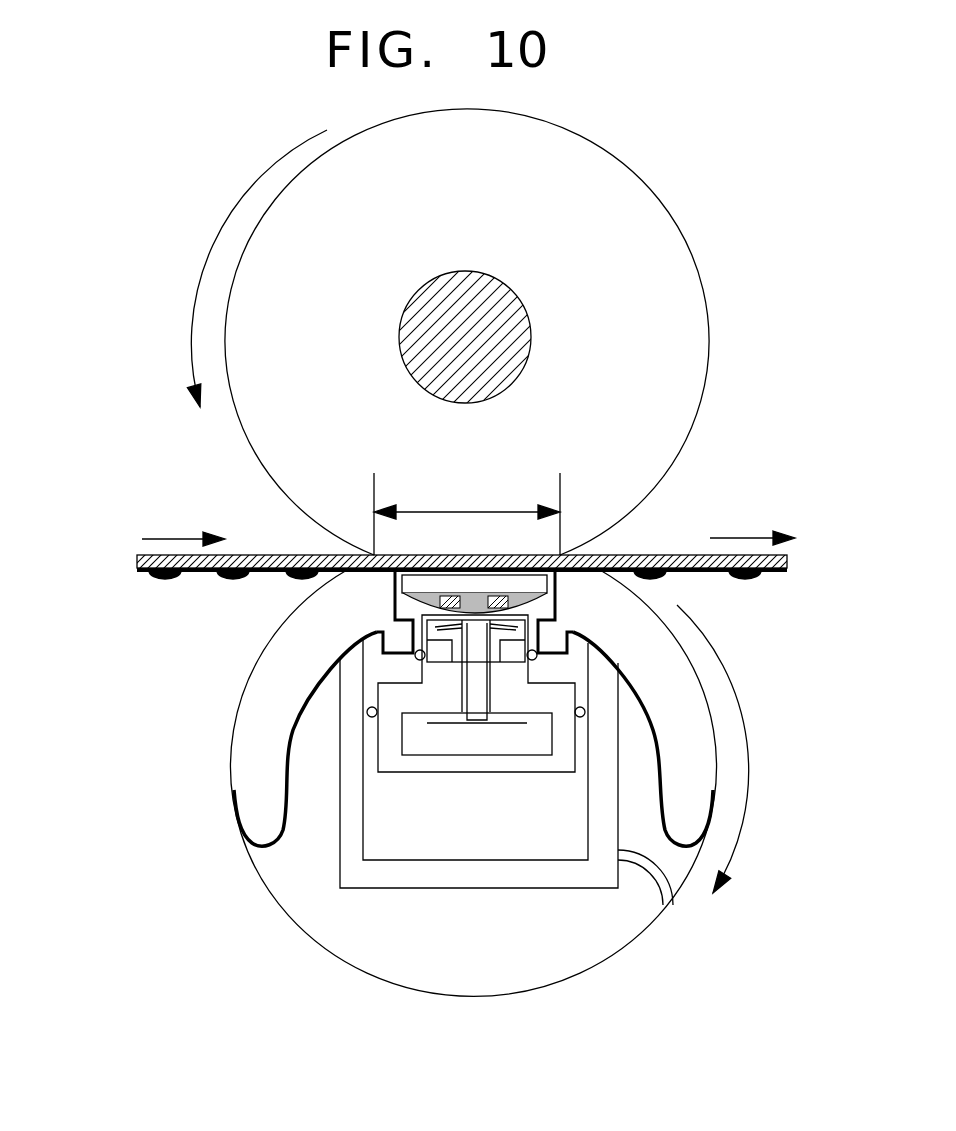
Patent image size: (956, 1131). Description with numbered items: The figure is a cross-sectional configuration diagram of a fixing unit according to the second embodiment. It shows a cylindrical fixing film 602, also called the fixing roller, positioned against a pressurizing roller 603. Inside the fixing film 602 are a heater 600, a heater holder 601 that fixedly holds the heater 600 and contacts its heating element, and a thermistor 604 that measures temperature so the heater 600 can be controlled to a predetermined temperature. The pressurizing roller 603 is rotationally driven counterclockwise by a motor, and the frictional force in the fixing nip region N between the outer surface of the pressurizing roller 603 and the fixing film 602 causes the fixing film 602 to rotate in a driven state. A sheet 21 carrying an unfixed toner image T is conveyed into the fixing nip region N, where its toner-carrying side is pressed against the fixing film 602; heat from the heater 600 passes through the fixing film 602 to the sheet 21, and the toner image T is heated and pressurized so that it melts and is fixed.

The sheet 21 is at (137, 557).
The unfixed toner image T is at (237, 578).
The fixing nip region N is at (467, 514).
The heater 600 is at (546, 583).
The heater holder 601 is at (258, 790).
The fixing film 602 is at (258, 880).
The pressurizing roller 603 is at (704, 257).
The thermistor 604 is at (528, 775).